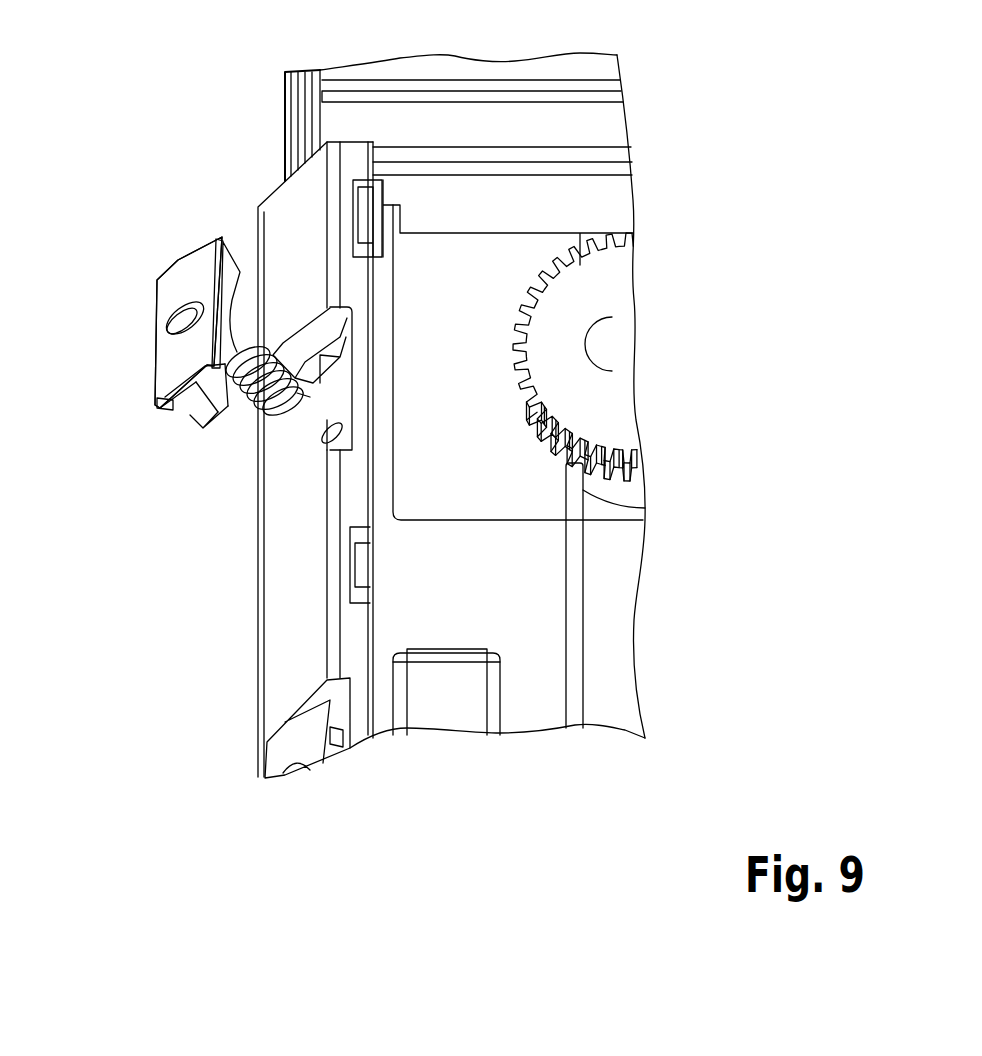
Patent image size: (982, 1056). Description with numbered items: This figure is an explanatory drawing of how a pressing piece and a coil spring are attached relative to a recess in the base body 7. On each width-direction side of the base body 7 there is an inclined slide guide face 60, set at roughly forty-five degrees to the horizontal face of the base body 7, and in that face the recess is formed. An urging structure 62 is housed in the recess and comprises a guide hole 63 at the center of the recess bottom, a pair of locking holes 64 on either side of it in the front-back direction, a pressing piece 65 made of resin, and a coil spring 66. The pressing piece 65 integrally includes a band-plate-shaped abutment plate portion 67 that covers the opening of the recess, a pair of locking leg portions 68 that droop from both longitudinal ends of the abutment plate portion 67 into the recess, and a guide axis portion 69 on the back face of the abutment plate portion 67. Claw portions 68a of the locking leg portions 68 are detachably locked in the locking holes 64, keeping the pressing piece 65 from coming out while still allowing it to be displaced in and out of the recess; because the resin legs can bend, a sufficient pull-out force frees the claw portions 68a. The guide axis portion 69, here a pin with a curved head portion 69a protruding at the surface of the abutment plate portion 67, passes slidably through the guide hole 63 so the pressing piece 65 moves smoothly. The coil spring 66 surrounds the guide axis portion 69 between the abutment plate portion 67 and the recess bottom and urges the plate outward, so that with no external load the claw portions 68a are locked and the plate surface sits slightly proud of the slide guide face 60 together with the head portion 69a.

The base body 7 is at (535, 603).
The slide guide face 60 is at (287, 207).
The urging structure 62 is at (135, 296).
The guide hole 63 is at (322, 440).
The locking hole 64 is at (330, 357).
The pressing piece 65 is at (148, 319).
The coil spring 66 is at (257, 407).
The abutment plate portion 67 is at (150, 380).
The locking leg portion 68 is at (193, 410).
The claw portion 68a is at (227, 417).
The guide axis portion 69 is at (235, 348).
The head portion 69a is at (157, 333).